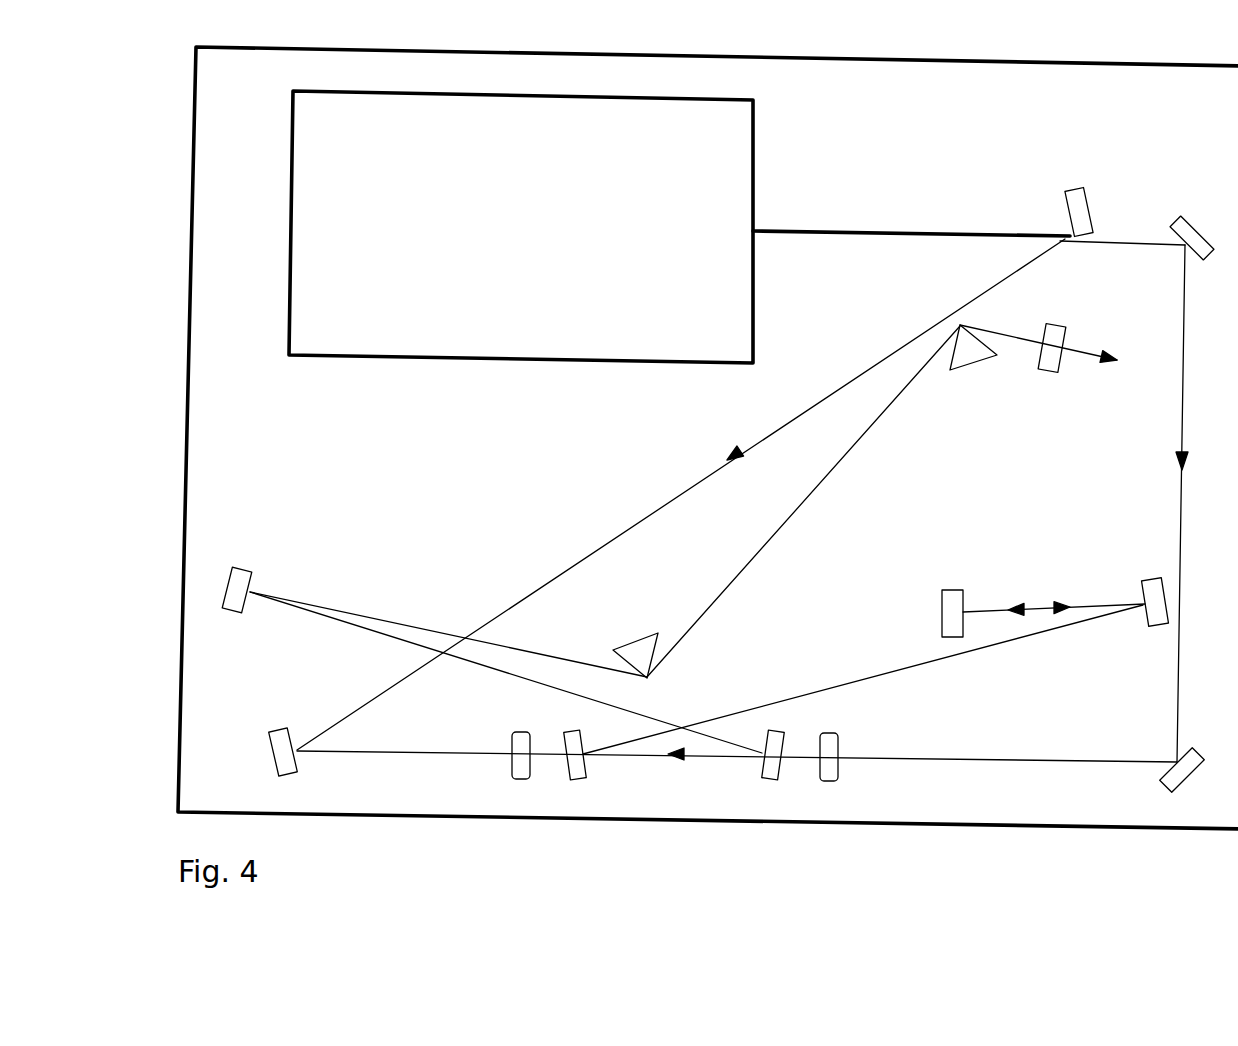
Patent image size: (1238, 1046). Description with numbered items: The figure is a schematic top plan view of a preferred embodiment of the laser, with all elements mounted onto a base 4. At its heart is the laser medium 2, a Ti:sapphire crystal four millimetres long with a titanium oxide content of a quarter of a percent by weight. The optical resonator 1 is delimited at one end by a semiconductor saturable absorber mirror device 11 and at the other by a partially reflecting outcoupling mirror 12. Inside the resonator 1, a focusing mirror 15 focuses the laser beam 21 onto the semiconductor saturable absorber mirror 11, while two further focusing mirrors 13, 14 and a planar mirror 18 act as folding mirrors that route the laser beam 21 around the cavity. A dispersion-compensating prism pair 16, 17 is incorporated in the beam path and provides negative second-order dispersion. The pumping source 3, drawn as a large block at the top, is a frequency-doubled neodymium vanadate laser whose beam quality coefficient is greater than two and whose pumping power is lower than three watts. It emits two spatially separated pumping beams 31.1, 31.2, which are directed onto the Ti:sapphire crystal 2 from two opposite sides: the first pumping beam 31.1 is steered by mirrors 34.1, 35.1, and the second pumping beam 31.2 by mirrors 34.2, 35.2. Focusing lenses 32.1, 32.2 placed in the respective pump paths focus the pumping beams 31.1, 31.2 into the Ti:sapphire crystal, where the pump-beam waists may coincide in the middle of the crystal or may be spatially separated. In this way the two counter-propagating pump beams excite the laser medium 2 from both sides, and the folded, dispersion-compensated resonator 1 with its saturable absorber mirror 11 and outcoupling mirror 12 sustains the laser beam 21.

The optical resonator 1 is at (524, 540).
The laser medium 2 is at (672, 756).
The pumping source 3 is at (349, 344).
The base 4 is at (1229, 812).
The semiconductor saturable absorber mirror device 11 is at (952, 592).
The partially reflecting outcoupling mirror 12 is at (1048, 372).
The focusing mirror 13 is at (767, 780).
The focusing mirror 14 is at (576, 780).
The focusing mirror 15 is at (1157, 626).
The dispersion-compensating prism 16 is at (638, 650).
The dispersion-compensating prism 17 is at (970, 358).
The mirror 18 is at (242, 572).
The laser beam 21 is at (796, 518).
The pumping beam 31.1 is at (667, 500).
The pumping beam 31.2 is at (1180, 497).
The focusing lens 32.1 is at (521, 780).
The focusing lens 32.2 is at (829, 782).
The mirror 34.1 is at (1075, 196).
The mirror 34.2 is at (1191, 240).
The mirror 35.1 is at (279, 751).
The mirror 35.2 is at (1172, 778).